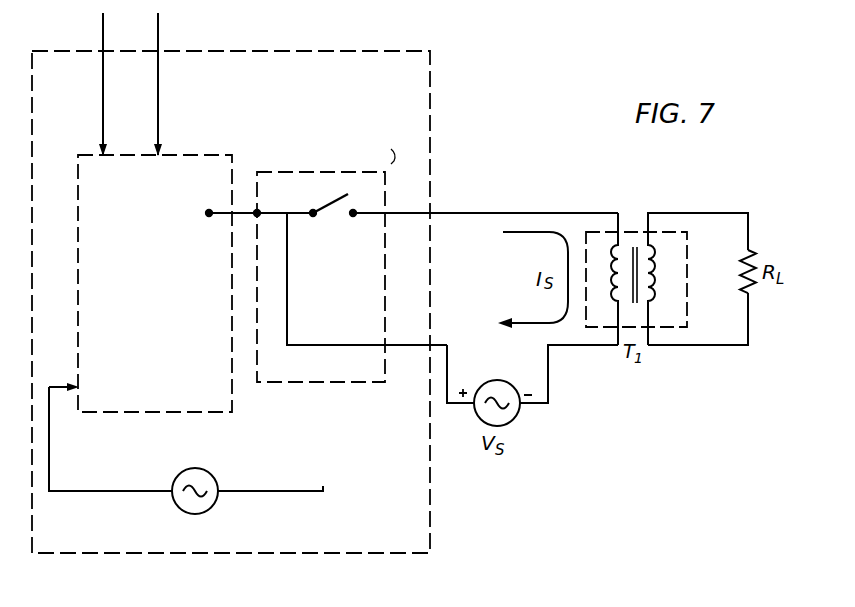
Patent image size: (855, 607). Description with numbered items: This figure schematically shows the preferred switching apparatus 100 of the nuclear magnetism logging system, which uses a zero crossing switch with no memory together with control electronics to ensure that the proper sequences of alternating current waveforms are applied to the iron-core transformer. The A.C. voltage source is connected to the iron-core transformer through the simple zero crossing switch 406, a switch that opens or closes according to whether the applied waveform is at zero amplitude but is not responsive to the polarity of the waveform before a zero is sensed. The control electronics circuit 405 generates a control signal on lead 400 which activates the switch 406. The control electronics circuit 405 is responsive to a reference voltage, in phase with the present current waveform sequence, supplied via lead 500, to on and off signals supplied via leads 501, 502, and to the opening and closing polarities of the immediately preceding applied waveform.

The control system 100 is at (430, 521).
The lead 400 is at (222, 210).
The control electronics circuit 405 is at (165, 312).
The zero crossing switch 406 is at (350, 293).
The lead 500 is at (297, 491).
The lead 501 is at (102, 30).
The lead 502 is at (158, 32).